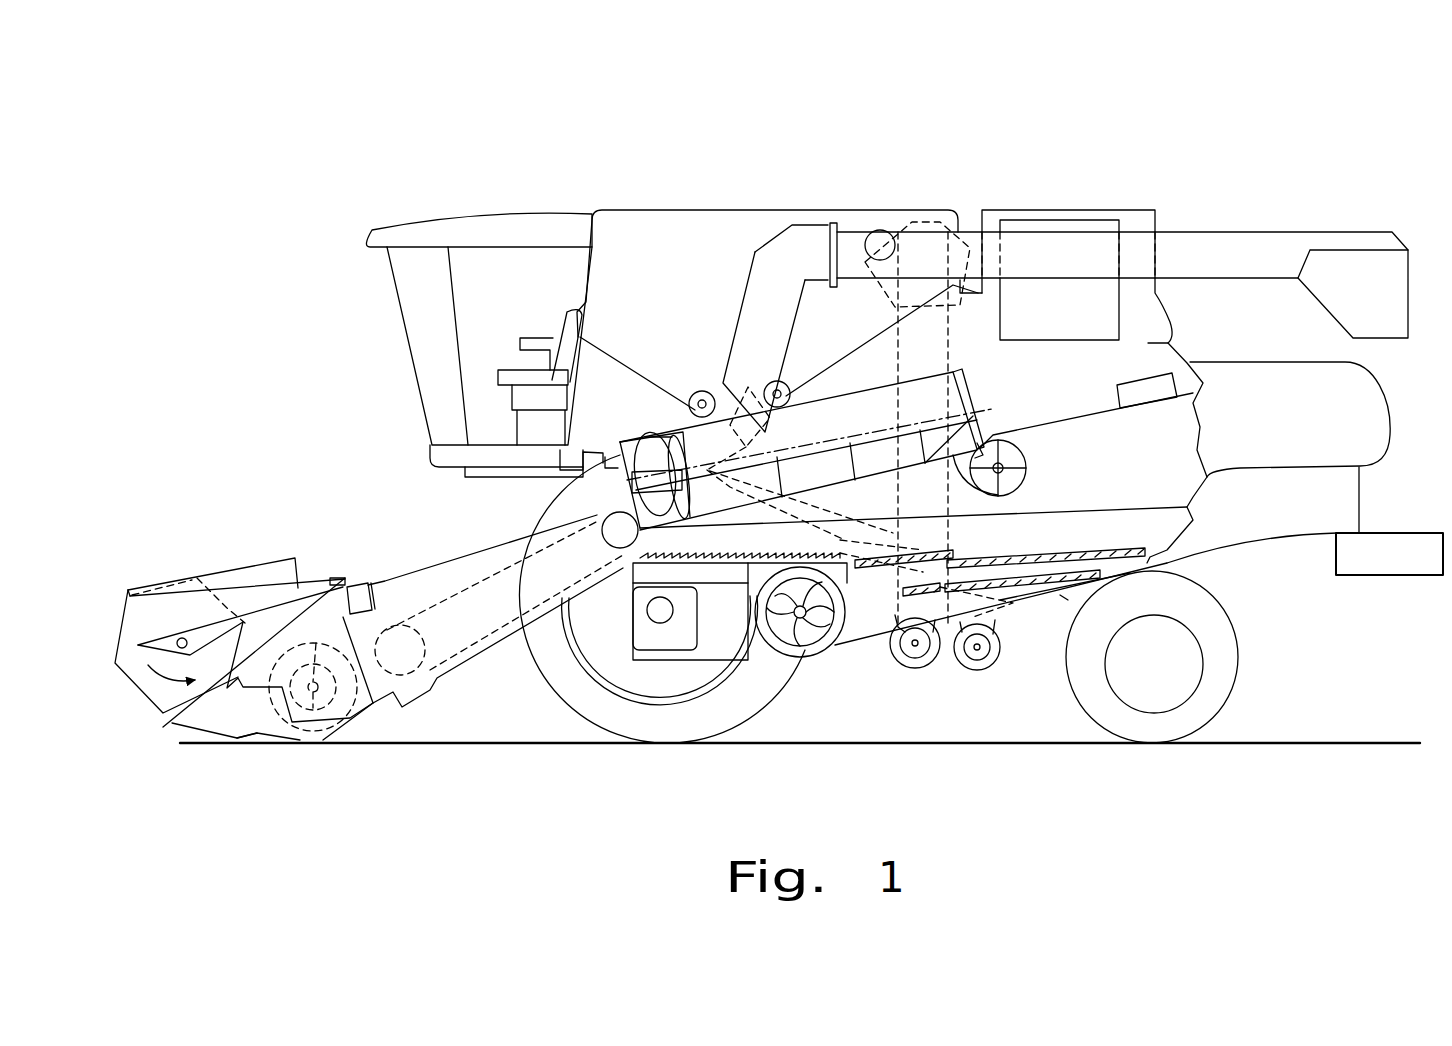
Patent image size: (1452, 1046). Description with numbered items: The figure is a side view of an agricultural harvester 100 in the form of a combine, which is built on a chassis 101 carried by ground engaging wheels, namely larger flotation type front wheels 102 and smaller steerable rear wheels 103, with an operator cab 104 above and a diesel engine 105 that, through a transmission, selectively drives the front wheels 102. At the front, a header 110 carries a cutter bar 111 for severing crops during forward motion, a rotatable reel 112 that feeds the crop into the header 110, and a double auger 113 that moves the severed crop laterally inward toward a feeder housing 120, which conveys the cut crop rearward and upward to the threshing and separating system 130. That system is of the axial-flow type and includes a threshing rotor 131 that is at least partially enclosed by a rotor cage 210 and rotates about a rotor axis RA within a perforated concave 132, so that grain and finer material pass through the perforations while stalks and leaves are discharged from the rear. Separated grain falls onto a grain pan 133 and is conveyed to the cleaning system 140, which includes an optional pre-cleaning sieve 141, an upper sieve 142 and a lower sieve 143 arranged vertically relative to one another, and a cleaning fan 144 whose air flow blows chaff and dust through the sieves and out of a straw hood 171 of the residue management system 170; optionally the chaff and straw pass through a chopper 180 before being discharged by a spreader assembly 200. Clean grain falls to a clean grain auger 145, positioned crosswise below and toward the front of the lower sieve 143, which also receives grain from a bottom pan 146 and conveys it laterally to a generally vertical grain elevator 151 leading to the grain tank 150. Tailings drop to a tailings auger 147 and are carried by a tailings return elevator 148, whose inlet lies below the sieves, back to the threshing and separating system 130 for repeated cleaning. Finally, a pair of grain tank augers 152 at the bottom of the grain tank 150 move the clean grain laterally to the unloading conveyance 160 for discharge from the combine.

The agricultural harvester 100 is at (468, 198).
The chassis 101 is at (1167, 572).
The front wheels 102 is at (558, 697).
The rear wheels 103 is at (1233, 678).
The operator cab 104 is at (400, 320).
The diesel engine 105 is at (1050, 222).
The header 110 is at (218, 555).
The cutter bar 111 is at (258, 733).
The rotatable reel 112 is at (120, 632).
The double auger 113 is at (313, 713).
The feeder housing 120 is at (445, 565).
The threshing and separating system 130 is at (560, 495).
The threshing rotor 131 is at (648, 457).
The perforated concave 132 is at (833, 427).
The grain pan 133 is at (633, 567).
The cleaning system 140 is at (860, 675).
The pre-cleaning sieve 141 is at (950, 552).
The upper sieve 142 is at (1060, 548).
The lower sieve 143 is at (1030, 600).
The cleaning fan 144 is at (807, 640).
The clean grain auger 145 is at (921, 652).
The bottom pan 146 is at (1067, 597).
The tailings auger 147 is at (978, 670).
The tailings return elevator 148 is at (880, 545).
The grain tank 150 is at (650, 215).
The grain elevator 151 is at (950, 350).
The grain tank augers 152 is at (700, 392).
The unloading conveyance 160 is at (1253, 240).
The residue management system 170 is at (1331, 593).
The straw hood 171 is at (1370, 408).
The chopper 180 is at (1117, 398).
The spreader assembly 200 is at (1416, 528).
The rotor cage 210 is at (657, 437).
The rotor axis RA is at (880, 420).